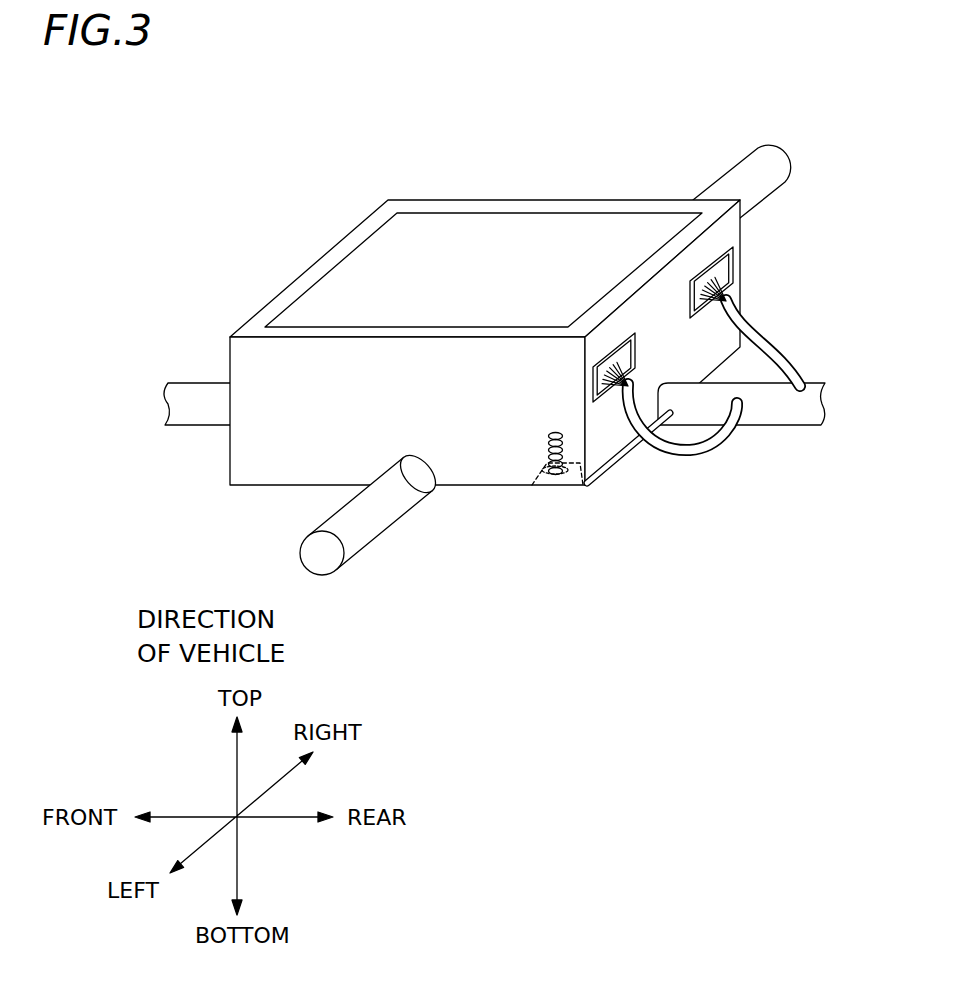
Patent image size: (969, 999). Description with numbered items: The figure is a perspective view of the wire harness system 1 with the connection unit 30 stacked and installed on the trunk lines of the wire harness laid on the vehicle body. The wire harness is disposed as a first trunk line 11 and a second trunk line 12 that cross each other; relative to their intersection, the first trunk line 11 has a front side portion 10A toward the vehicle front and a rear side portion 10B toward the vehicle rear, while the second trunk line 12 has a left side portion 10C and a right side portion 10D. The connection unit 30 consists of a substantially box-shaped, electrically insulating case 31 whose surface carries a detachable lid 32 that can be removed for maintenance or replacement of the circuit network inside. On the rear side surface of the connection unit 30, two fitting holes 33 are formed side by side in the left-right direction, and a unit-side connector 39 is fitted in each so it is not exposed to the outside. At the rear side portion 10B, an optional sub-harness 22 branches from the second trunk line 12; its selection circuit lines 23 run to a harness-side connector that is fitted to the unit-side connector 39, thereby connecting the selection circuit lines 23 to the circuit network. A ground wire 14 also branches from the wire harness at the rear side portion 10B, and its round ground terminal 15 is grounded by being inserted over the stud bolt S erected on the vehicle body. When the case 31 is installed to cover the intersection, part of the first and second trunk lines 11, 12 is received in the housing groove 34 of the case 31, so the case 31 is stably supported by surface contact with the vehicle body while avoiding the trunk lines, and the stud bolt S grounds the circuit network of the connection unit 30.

The wire harness system 1 is at (312, 196).
The front side portion 10A is at (213, 383).
The rear side portion 10B is at (780, 415).
The left side portion 10C is at (400, 508).
The right side portion 10D is at (757, 165).
The first trunk line 11 is at (180, 383).
The second trunk line 12 is at (353, 547).
The ground wire 14 is at (640, 458).
The ground terminal 15 is at (543, 490).
The stud bolt S is at (580, 490).
The optional sub-harness 22 is at (788, 345).
The selection circuit lines 23 is at (727, 282).
The connection unit 30 is at (451, 197).
The case 31 is at (522, 208).
The lid 32 is at (390, 240).
The fitting holes 33 is at (740, 258).
The housing groove 34 is at (714, 270).
The unit-side connector 39 is at (634, 344).